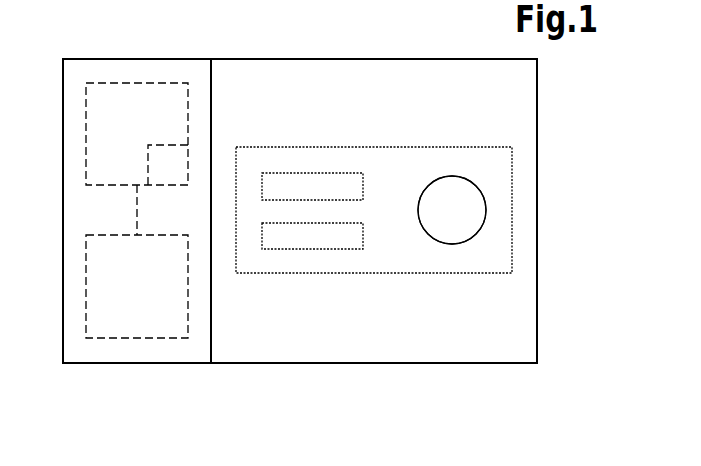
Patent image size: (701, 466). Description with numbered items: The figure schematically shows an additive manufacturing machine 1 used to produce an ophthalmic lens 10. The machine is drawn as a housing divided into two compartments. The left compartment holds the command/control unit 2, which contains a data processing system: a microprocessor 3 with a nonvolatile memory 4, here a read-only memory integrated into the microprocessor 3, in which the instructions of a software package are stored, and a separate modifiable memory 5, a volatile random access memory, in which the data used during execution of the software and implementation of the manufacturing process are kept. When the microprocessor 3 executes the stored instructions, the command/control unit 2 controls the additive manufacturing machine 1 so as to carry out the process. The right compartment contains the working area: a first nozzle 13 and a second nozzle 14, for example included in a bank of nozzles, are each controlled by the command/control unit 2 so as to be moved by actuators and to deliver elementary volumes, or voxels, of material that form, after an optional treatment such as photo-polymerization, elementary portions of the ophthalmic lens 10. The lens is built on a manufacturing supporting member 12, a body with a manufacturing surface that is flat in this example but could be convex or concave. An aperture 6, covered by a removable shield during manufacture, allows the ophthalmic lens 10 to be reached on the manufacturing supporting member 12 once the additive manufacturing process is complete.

The additive manufacturing machine 1 is at (512, 375).
The command/control unit 2 is at (106, 366).
The microprocessor 3 is at (118, 83).
The nonvolatile memory 4 is at (160, 162).
The modifiable memory 5 is at (88, 269).
The aperture 6 is at (493, 243).
The ophthalmic lens 10 is at (445, 223).
The manufacturing supporting member 12 is at (467, 177).
The first nozzle 13 is at (337, 183).
The second nozzle 14 is at (292, 243).